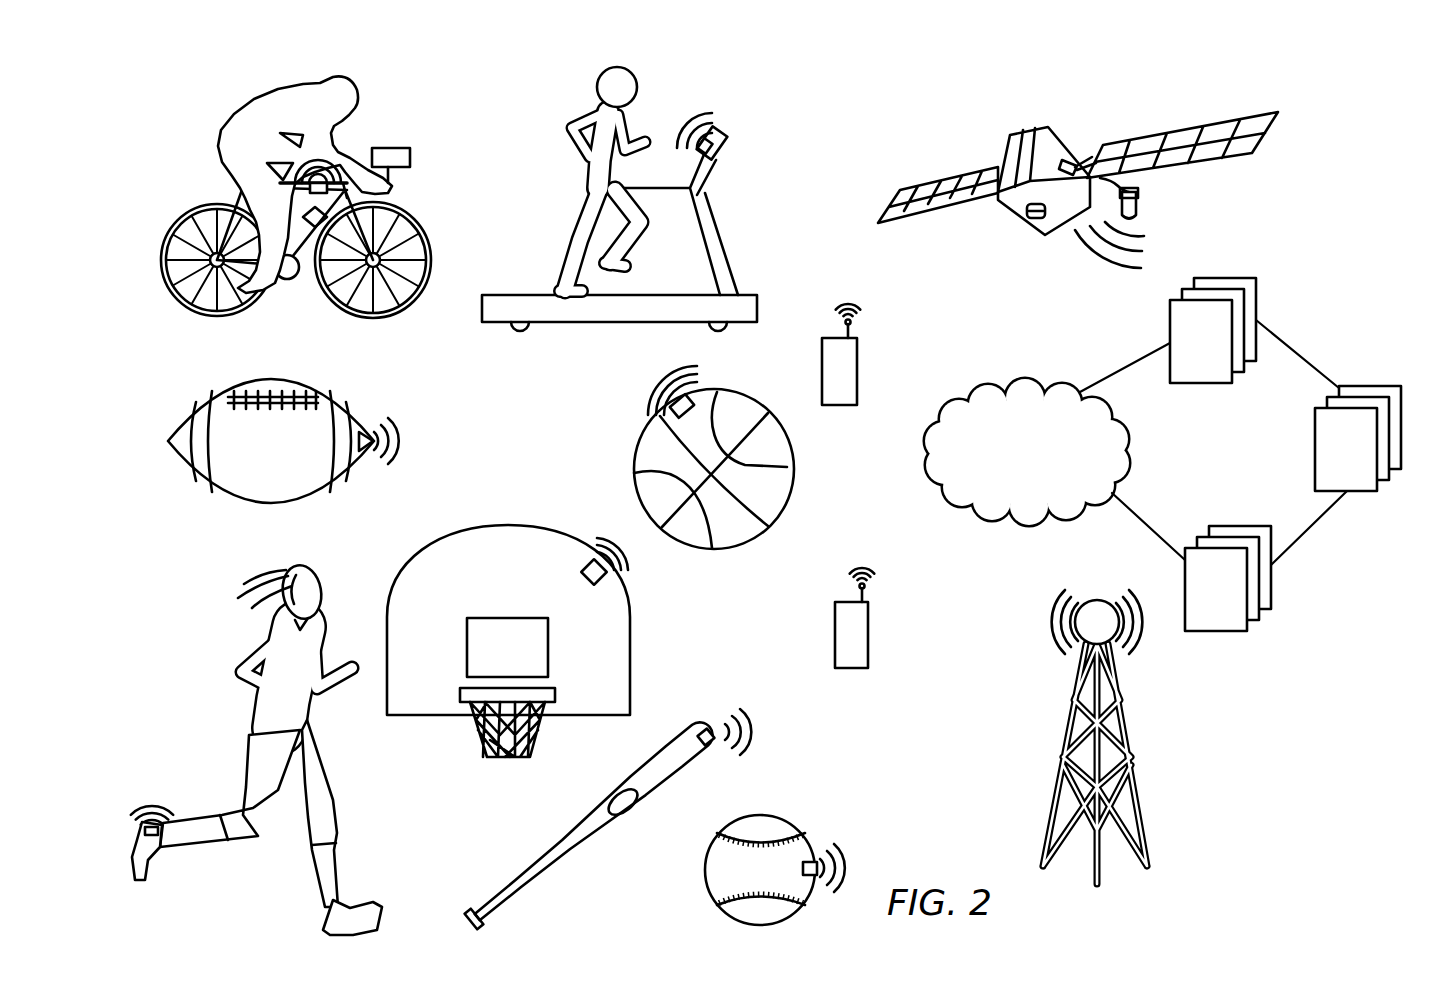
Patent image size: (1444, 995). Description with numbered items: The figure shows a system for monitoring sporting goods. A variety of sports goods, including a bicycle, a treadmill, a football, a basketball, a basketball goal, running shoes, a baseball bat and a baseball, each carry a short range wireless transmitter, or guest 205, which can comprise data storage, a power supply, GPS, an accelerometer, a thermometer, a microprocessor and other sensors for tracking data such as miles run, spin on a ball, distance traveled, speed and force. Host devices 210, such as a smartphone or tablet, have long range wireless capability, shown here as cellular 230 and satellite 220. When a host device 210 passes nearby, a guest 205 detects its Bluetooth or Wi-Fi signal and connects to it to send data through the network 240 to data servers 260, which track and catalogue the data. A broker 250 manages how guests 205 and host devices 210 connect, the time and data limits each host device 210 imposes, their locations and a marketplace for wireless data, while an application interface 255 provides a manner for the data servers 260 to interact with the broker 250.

The short range wireless transmitter (guest) 205 is at (386, 126).
The host device 210 is at (857, 366).
The satellite 220 is at (1012, 150).
The cellular 230 is at (1067, 730).
The network cloud 240 is at (1027, 452).
The broker 250 is at (1272, 583).
The application interface 255 is at (1378, 487).
The data server 260 is at (1257, 286).